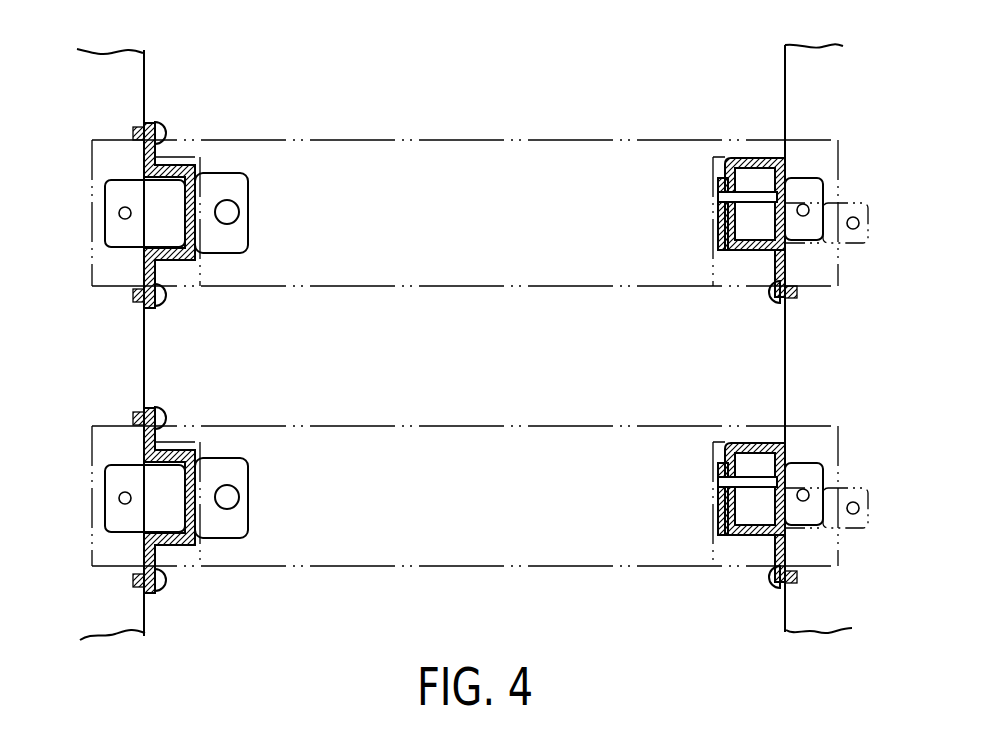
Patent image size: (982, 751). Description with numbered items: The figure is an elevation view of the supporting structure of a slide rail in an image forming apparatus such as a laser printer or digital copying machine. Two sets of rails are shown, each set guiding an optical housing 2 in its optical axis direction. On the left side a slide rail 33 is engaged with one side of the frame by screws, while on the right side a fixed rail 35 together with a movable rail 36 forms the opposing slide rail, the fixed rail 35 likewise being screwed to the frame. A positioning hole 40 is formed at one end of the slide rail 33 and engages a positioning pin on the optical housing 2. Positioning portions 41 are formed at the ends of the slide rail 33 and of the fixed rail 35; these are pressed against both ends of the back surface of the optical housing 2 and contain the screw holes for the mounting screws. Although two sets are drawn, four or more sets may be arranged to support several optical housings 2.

The optical housing 2 is at (384, 140).
The slide rail 33 is at (174, 165).
The fixed rail 35 is at (718, 222).
The movable rail 36 is at (751, 158).
The positioning hole 40 is at (229, 210).
The positioning portions 41 is at (96, 208).